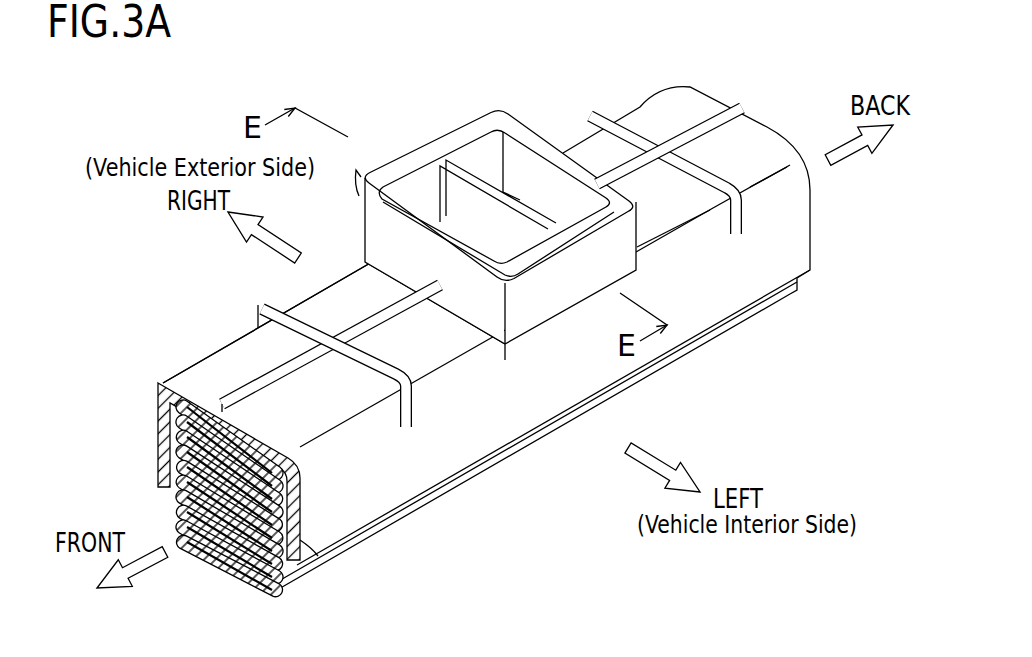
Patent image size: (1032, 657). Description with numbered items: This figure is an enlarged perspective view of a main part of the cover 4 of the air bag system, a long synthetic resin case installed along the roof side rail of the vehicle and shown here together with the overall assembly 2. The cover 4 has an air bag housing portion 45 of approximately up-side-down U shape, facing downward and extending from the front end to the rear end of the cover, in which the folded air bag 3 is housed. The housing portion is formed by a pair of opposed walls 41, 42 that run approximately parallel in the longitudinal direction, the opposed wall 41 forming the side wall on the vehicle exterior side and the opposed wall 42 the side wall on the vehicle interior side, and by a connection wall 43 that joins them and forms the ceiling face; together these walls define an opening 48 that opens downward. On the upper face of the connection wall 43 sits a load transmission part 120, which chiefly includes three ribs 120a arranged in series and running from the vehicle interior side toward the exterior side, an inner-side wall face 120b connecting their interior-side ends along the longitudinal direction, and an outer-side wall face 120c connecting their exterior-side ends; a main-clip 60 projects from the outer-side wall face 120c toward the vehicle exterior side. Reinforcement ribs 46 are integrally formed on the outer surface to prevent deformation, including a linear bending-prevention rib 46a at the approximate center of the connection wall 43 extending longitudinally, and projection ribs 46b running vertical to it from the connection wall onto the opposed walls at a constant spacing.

The duct assembly 2 is at (130, 277).
The air bag 3 is at (290, 585).
The cover 4 is at (775, 124).
The opposed wall 41 is at (160, 452).
The opposed wall 42 is at (423, 460).
The connection wall 43 is at (250, 357).
The air bag housing portion 45 is at (243, 550).
The reinforcement ribs 46 is at (609, 171).
The bending-prevention rib 46a is at (698, 130).
The projection rib 46b is at (400, 367).
The opening 48 is at (293, 543).
The main-clip 60 is at (393, 155).
The load transmission part 120 is at (612, 250).
The rib 120a is at (482, 205).
The inner-side wall face 120b is at (596, 312).
The outer-side wall face 120c is at (497, 128).